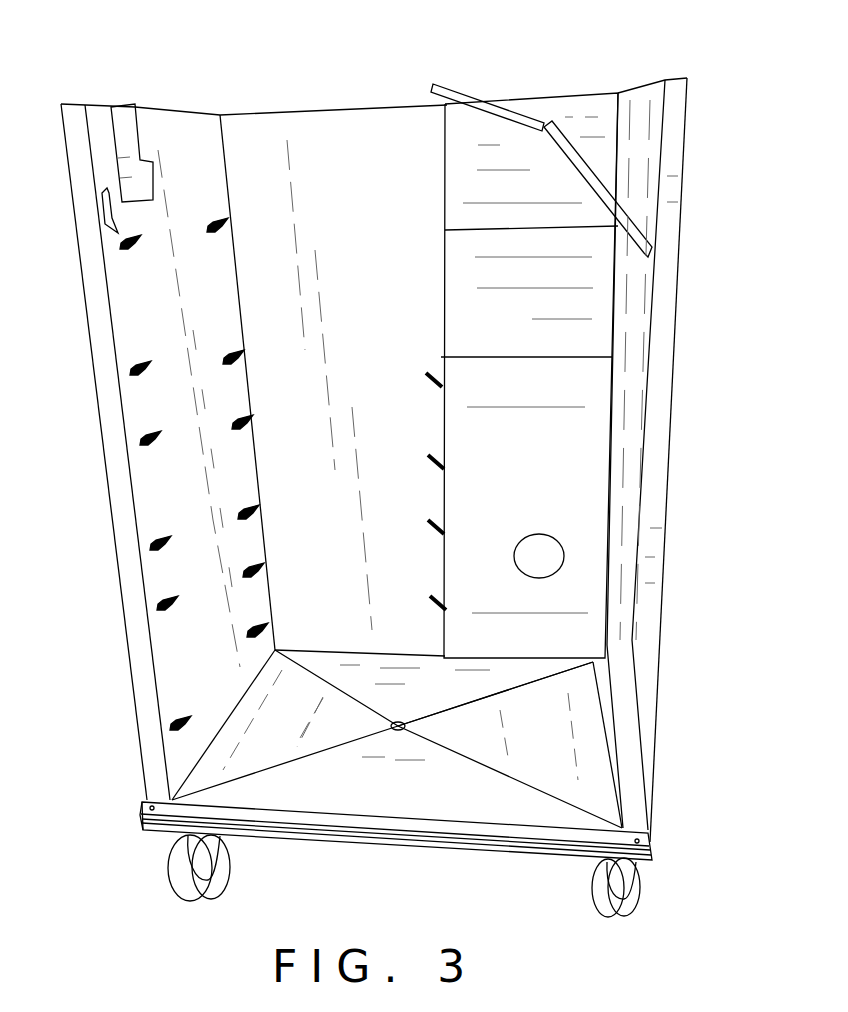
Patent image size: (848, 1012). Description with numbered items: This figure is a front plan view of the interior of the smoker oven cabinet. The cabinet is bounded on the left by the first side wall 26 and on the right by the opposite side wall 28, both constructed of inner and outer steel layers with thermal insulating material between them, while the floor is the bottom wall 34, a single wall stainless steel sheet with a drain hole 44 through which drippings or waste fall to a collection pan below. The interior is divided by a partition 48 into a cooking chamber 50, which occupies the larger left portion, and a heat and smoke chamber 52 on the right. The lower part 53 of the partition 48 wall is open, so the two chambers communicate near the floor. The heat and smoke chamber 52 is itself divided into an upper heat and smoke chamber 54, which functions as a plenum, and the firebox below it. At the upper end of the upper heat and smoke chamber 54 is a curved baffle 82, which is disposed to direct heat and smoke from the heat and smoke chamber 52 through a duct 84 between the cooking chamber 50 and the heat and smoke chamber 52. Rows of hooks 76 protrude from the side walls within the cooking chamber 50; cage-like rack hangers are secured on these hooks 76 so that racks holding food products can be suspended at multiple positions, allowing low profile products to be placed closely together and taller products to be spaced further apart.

The first side wall 26 is at (127, 522).
The opposite side wall 28 is at (647, 612).
The bottom wall 34 is at (323, 780).
The drain hole 44 is at (402, 730).
The partition 48 is at (443, 453).
The cooking chamber 50 is at (265, 150).
The heat and smoke chamber 52 is at (553, 328).
The lower part of partition 53 is at (435, 683).
The upper heat and smoke chamber 54 is at (540, 210).
The hooks 76 is at (133, 372).
The curved baffle 82 is at (513, 110).
The duct 84 is at (445, 153).